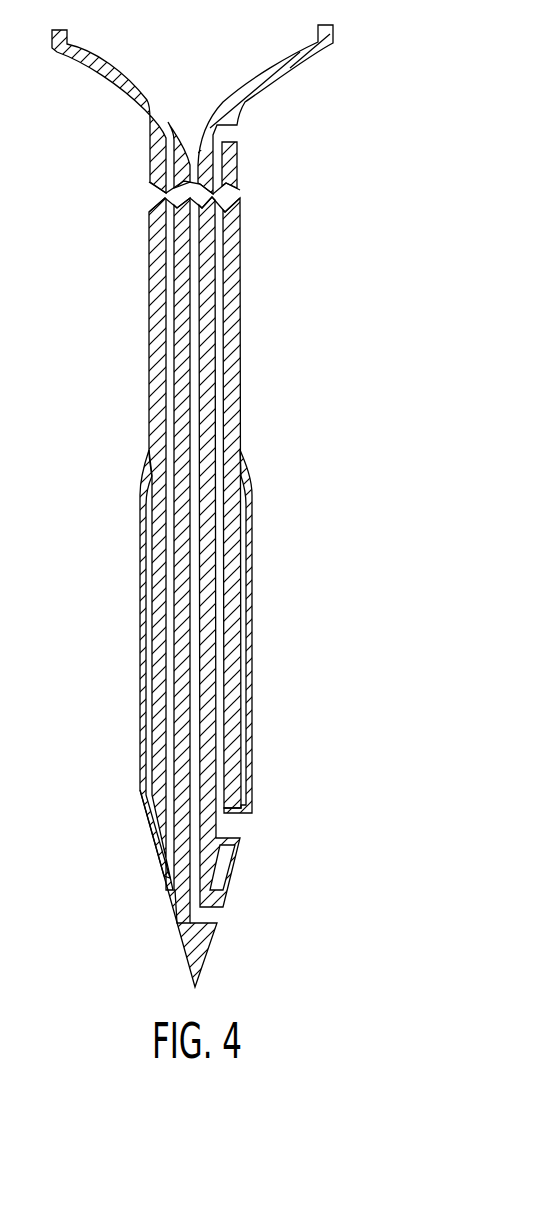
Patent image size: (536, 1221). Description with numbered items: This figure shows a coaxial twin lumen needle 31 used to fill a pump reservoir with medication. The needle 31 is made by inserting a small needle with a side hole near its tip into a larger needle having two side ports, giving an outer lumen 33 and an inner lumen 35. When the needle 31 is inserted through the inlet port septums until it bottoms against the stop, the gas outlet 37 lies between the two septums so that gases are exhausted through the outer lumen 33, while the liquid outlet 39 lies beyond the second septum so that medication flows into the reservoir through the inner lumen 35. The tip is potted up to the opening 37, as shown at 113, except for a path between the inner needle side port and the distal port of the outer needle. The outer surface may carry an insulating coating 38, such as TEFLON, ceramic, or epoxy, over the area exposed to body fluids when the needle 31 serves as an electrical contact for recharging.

The needle 31 is at (282, 369).
The outer lumen 33 is at (220, 630).
The inner lumen 35 is at (197, 700).
The gas outlet 37 is at (242, 825).
The insulating coating 38 is at (141, 672).
The liquid outlet 39 is at (220, 917).
The potting 113 is at (188, 938).